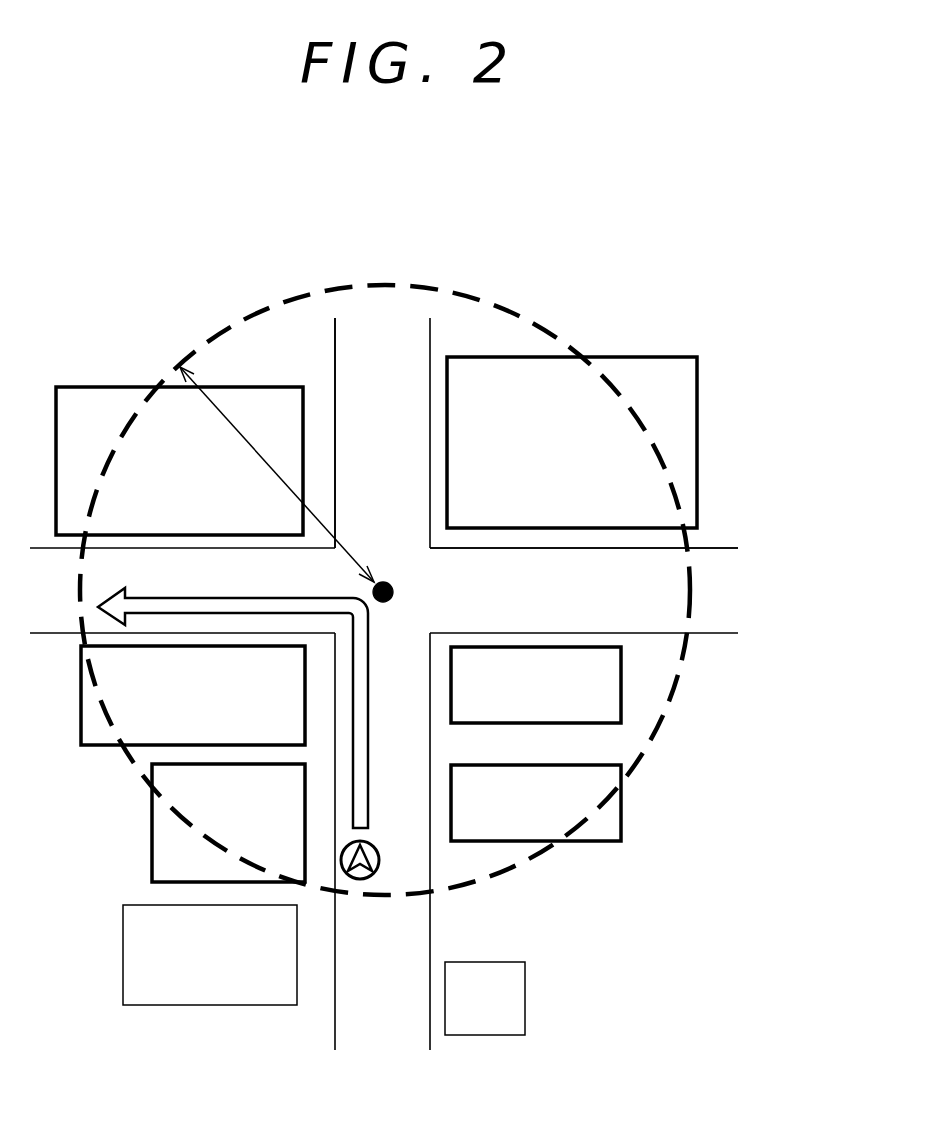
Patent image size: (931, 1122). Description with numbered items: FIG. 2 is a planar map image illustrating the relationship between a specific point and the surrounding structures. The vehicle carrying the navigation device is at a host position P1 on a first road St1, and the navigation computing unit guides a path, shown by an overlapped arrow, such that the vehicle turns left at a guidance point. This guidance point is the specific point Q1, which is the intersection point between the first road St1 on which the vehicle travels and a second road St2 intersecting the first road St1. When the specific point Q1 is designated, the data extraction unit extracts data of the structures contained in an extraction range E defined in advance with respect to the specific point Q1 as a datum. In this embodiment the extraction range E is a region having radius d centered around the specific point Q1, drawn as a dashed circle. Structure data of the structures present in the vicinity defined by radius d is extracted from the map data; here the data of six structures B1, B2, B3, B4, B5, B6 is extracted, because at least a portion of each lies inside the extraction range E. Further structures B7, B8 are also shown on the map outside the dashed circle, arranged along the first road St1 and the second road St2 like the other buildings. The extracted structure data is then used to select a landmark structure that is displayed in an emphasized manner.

The structure B1 is at (228, 823).
The structure B2 is at (193, 695).
The structure B3 is at (179, 461).
The structure B4 is at (536, 803).
The structure B5 is at (536, 685).
The structure B6 is at (572, 442).
The building B7 is at (210, 955).
The building B8 is at (485, 998).
The first road St1 is at (367, 358).
The second road St2 is at (710, 572).
The specific point Q1 is at (383, 580).
The radius d is at (277, 474).
The host position P1 is at (380, 850).
The extraction range E is at (680, 665).